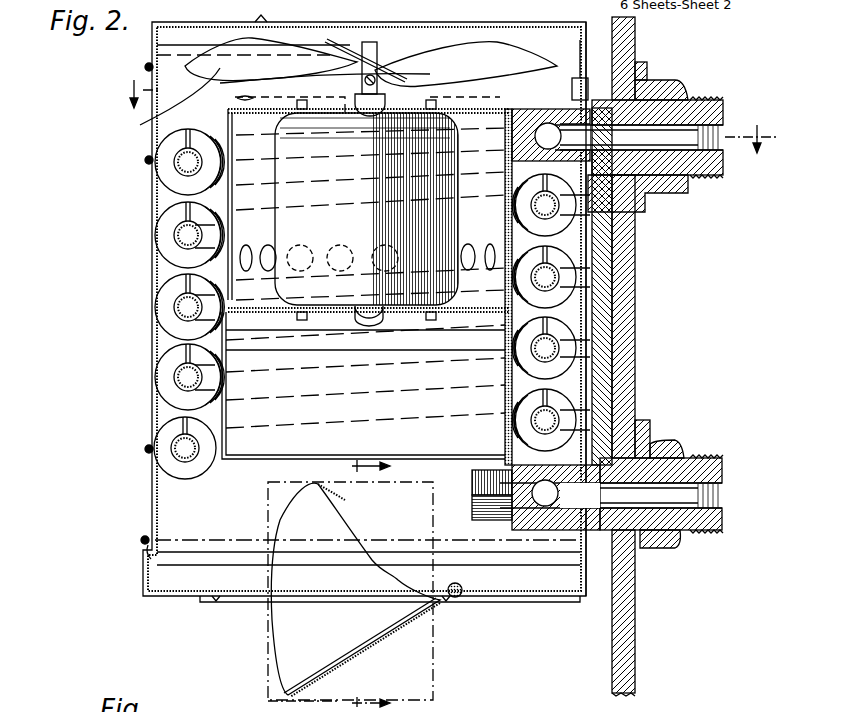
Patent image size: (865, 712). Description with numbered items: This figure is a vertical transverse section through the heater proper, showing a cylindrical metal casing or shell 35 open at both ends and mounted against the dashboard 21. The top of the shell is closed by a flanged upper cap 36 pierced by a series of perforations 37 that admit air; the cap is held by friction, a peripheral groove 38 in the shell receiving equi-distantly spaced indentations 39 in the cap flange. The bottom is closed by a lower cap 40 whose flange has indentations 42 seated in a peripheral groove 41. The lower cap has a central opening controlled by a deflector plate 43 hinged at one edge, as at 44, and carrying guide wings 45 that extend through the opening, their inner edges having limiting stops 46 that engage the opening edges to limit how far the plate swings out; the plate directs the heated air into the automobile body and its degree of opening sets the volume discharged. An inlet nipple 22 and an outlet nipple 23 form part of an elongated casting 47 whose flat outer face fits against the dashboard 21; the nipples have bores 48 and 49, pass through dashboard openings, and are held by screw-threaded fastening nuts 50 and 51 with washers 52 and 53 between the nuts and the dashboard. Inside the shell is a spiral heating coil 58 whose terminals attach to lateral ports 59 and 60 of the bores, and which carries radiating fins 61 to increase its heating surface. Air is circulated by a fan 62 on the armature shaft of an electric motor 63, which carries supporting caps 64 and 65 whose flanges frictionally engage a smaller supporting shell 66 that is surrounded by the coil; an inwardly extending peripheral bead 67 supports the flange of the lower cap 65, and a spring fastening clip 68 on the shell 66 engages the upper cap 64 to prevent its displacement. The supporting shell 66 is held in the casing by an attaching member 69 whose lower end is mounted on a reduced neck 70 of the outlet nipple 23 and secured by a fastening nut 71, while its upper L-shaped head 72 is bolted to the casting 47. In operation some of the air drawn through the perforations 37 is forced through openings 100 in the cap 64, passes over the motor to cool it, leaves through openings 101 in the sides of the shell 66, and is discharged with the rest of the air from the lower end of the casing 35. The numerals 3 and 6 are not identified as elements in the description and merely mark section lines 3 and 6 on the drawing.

The section line 3- 3 is at (445, 116).
The section line 6- 6 is at (329, 585).
The dashboard 21 is at (625, 308).
The inlet nipple 22 is at (695, 102).
The outlet nipple 23 is at (686, 458).
The casing or shell 35 is at (152, 377).
The upper cap 36 is at (155, 46).
The perforations 37 is at (360, 28).
The peripheral groove 38 is at (165, 62).
The indentations 39 is at (162, 55).
The lower cap 40 is at (195, 596).
The peripheral groove 41 is at (157, 556).
The indentations 42 is at (143, 558).
The deflector plate 43 is at (410, 625).
The hinge 44 is at (462, 589).
The guide wings 45 is at (275, 637).
The limiting stops 46 is at (345, 503).
The casting 47 is at (620, 246).
The bore 48 is at (688, 147).
The bore 49 is at (685, 512).
The fastening nut 50 is at (677, 83).
The fastening nut 51 is at (665, 548).
The washer 52 is at (648, 66).
The washer 53 is at (650, 432).
The spiral heating coil 58 is at (175, 238).
The lateral port 59 is at (548, 124).
The lateral port 60 is at (546, 506).
The radiating fins 61 is at (178, 292).
The fan 62 is at (162, 103).
The electric motor 63 is at (366, 170).
The supporting cap 64 is at (400, 92).
The supporting cap 65 is at (455, 320).
The supporting shell 66 is at (290, 431).
The peripheral bead 67 is at (285, 352).
The spring fastening clip 68 is at (232, 103).
The attaching member 69 is at (505, 403).
The reduced neck 70 is at (472, 484).
The fastening nut 71 is at (472, 513).
The L-shaped head 72 is at (572, 80).
The openings 100 is at (265, 108).
The openings 101 is at (300, 252).